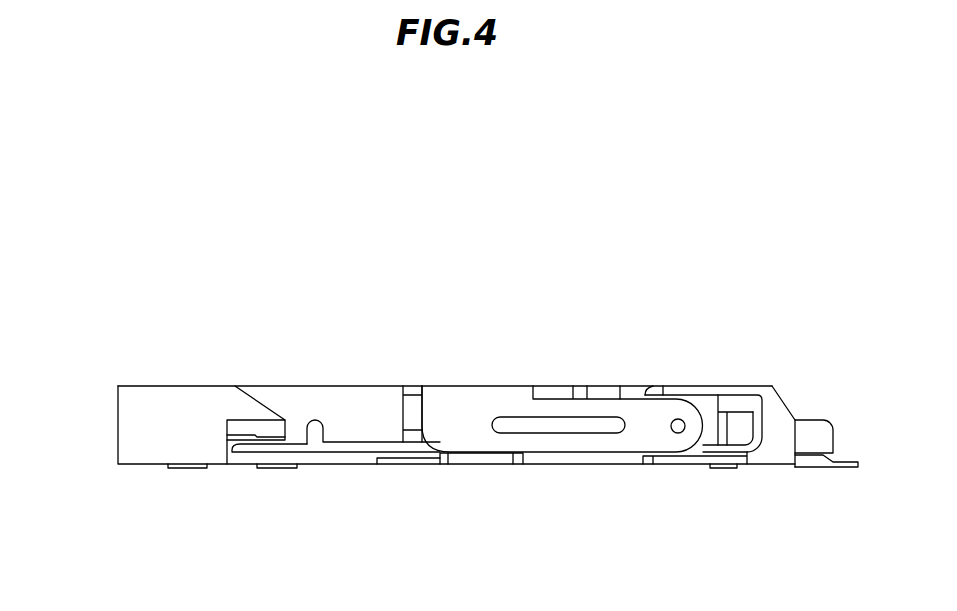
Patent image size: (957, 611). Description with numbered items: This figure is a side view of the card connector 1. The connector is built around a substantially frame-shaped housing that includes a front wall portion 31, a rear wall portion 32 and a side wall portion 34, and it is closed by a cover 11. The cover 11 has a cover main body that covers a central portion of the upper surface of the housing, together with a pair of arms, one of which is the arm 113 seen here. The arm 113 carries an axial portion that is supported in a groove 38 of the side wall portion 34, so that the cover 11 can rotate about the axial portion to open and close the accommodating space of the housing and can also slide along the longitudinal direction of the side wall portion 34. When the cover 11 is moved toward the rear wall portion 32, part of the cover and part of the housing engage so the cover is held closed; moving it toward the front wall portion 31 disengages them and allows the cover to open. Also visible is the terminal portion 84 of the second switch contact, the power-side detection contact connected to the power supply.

The card connector 1 is at (367, 364).
The cover 11 is at (459, 364).
The front wall portion 31 is at (778, 410).
The rear wall portion 32 is at (130, 424).
The side wall portion 34 is at (411, 418).
The groove 38 is at (735, 430).
The terminal portion 84 is at (845, 470).
The arm 113 is at (558, 435).